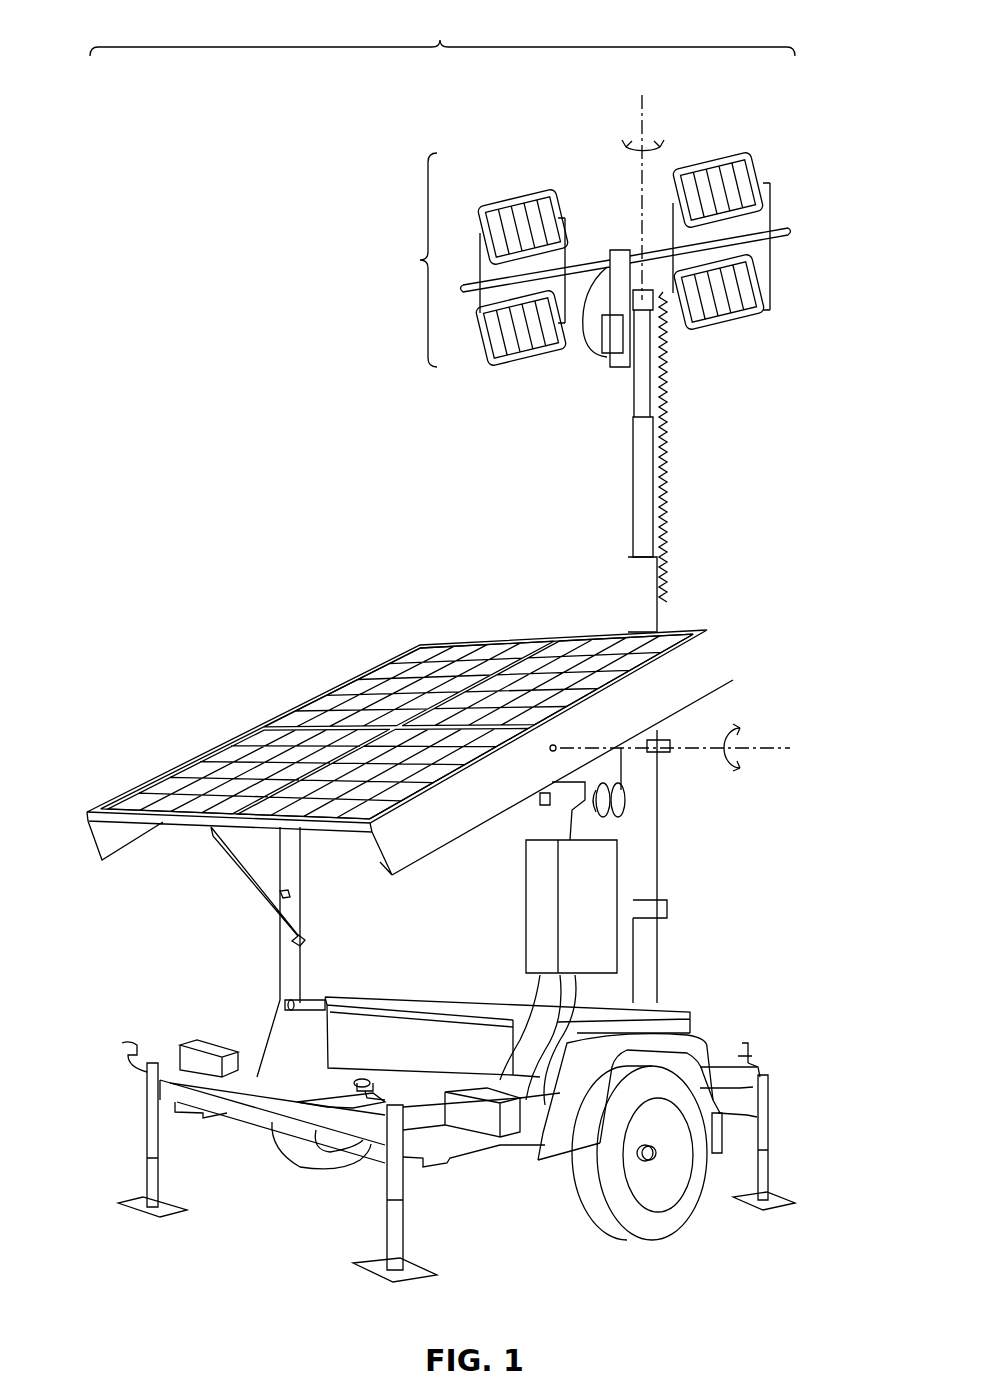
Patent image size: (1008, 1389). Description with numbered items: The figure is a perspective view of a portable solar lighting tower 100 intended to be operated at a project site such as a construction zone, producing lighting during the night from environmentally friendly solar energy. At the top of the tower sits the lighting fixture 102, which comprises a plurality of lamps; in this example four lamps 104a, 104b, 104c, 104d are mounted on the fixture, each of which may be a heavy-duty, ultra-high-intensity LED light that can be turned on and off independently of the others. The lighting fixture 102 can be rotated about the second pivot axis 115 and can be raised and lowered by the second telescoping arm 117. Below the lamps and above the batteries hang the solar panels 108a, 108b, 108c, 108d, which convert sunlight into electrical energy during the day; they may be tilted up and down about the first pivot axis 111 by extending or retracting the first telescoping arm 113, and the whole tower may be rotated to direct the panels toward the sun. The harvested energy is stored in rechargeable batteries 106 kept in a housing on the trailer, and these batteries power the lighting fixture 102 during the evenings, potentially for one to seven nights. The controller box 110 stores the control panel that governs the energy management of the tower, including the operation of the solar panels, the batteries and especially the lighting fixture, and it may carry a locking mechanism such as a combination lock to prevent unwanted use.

The portable solar lighting tower 100 is at (442, 31).
The lighting fixture 102 is at (580, 265).
The lamp 104a is at (516, 190).
The lamp 104b is at (704, 163).
The lamp 104c is at (532, 365).
The lamp 104d is at (731, 330).
The rechargeable batteries 106 is at (418, 997).
The solar panel 108a is at (242, 764).
The solar panel 108b is at (405, 680).
The solar panel 108c is at (390, 780).
The solar panel 108d is at (578, 672).
The controller box 110 is at (600, 880).
The first pivot axis 111 is at (765, 748).
The first telescoping arm 113 is at (243, 864).
The second pivot axis 115 is at (640, 120).
The second telescoping arm 117 is at (633, 495).